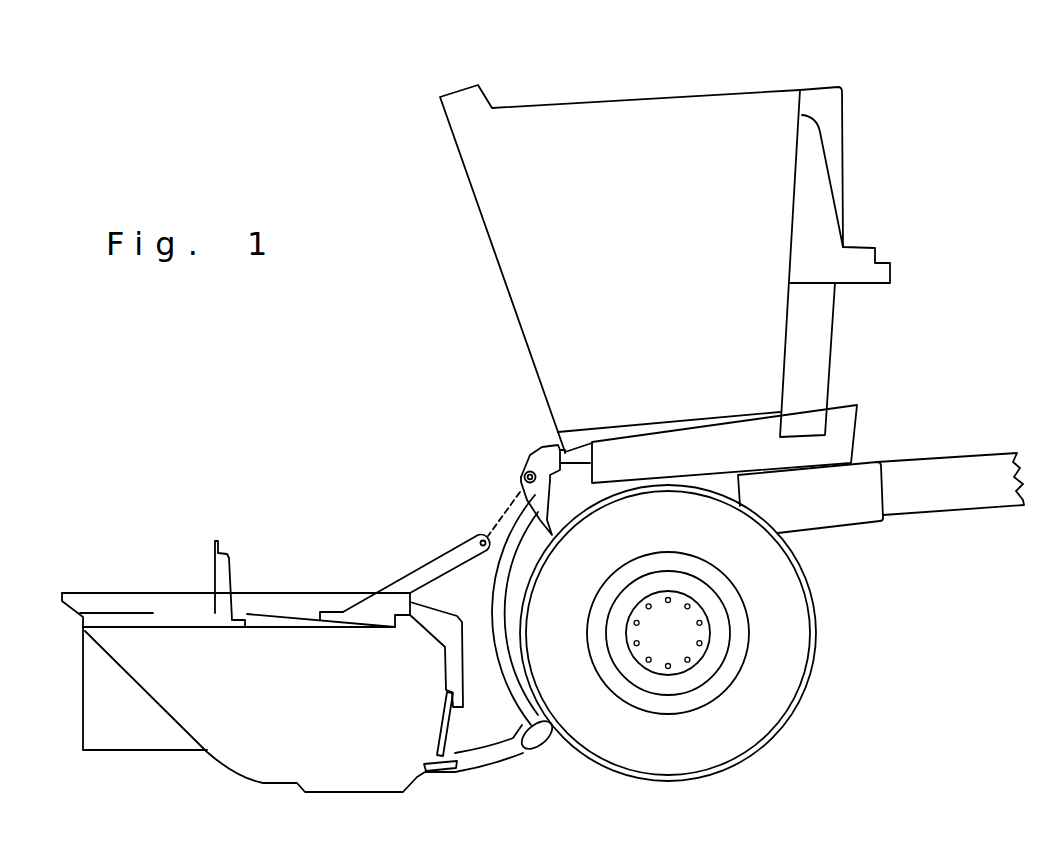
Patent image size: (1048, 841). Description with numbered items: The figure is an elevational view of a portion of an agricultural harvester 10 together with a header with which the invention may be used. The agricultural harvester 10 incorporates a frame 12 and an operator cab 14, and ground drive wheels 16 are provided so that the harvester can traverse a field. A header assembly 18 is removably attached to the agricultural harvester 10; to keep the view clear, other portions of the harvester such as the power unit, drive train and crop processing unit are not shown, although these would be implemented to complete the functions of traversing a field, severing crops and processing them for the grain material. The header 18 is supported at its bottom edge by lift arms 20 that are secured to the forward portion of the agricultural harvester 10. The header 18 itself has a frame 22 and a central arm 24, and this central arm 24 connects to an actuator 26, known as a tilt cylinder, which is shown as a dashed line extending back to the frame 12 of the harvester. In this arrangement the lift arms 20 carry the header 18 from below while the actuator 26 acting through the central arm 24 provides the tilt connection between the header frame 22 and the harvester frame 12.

The agricultural harvester 10 is at (918, 622).
The frame 12 is at (866, 477).
The operator cab 14 is at (760, 97).
The ground drive wheels 16 is at (730, 738).
The header assembly 18 is at (283, 584).
The lift arms 20 is at (515, 752).
The frame 22 is at (400, 753).
The central arm 24 is at (388, 605).
The actuator 26 is at (508, 507).